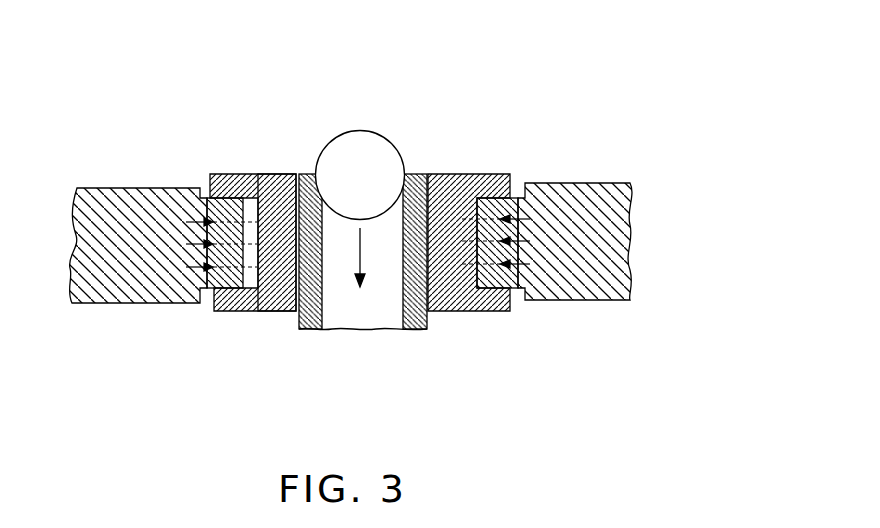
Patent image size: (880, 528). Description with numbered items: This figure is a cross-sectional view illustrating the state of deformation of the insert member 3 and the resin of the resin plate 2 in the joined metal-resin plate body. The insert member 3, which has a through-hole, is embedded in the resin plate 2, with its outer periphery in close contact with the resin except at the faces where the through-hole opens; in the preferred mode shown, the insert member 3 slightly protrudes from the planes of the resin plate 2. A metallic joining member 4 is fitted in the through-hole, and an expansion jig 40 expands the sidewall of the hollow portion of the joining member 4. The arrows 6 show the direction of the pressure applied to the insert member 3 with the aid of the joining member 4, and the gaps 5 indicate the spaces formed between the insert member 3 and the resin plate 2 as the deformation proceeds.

The resin plate 2 is at (132, 186).
The insert member 3 is at (245, 173).
The joining member 4 is at (327, 298).
The gaps 5 is at (458, 174).
The arrows 6 is at (283, 218).
The expansion jig 40 is at (348, 129).